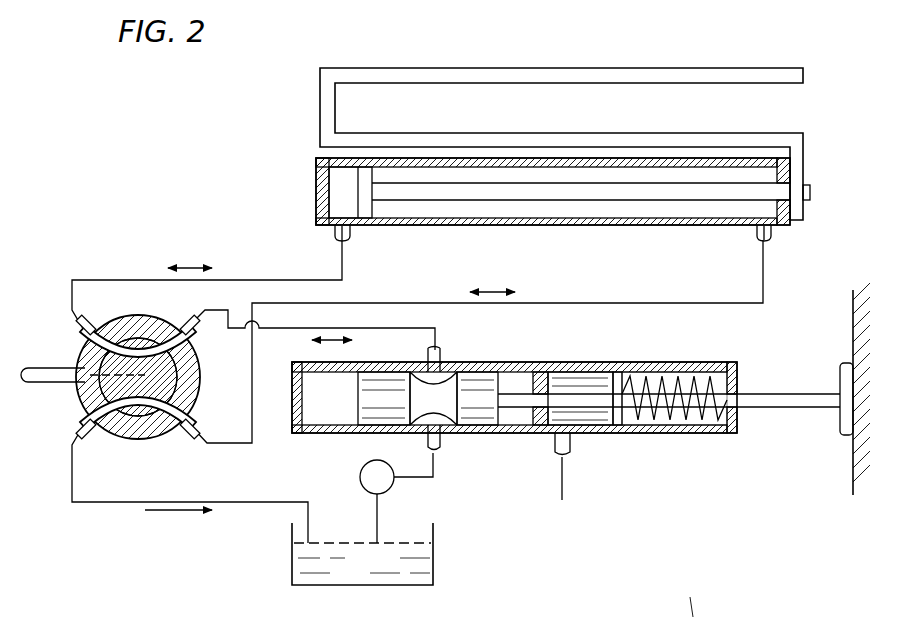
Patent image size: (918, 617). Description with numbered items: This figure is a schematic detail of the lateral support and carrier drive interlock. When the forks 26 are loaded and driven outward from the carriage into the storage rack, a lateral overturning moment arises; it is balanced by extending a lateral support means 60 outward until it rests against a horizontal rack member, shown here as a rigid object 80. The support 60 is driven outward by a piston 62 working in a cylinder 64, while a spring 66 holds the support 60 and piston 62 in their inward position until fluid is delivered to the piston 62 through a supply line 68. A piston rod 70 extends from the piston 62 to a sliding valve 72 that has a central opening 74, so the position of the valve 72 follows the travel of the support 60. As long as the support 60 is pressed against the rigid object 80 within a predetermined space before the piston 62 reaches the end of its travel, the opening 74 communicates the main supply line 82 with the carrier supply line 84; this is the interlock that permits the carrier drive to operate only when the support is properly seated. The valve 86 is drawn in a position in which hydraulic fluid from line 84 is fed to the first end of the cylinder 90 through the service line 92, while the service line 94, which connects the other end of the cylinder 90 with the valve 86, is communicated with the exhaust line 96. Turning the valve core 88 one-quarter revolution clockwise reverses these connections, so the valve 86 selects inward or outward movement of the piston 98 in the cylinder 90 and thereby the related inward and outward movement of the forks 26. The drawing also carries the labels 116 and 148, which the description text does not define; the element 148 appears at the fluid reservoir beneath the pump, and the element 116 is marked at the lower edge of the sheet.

The forks 26 is at (700, 82).
The lateral support means 60 is at (840, 423).
The piston 62 is at (617, 420).
The cylinder 64 is at (685, 434).
The spring 66 is at (712, 389).
The supply line 68 is at (562, 476).
The piston rod 70 is at (578, 390).
The sliding valve 72 is at (481, 410).
The central opening 74 is at (410, 398).
The rigid object 80 is at (853, 452).
The main supply line 82 is at (437, 463).
The carrier supply line 84 is at (213, 313).
The valve 86 is at (68, 340).
The valve core 88 is at (82, 393).
The cylinder 90 is at (342, 166).
The service line 92 is at (270, 281).
The service line 94 is at (770, 270).
The exhaust line 96 is at (120, 505).
The piston 98 is at (362, 177).
The member 116 is at (680, 612).
The reservoir 148 is at (298, 608).